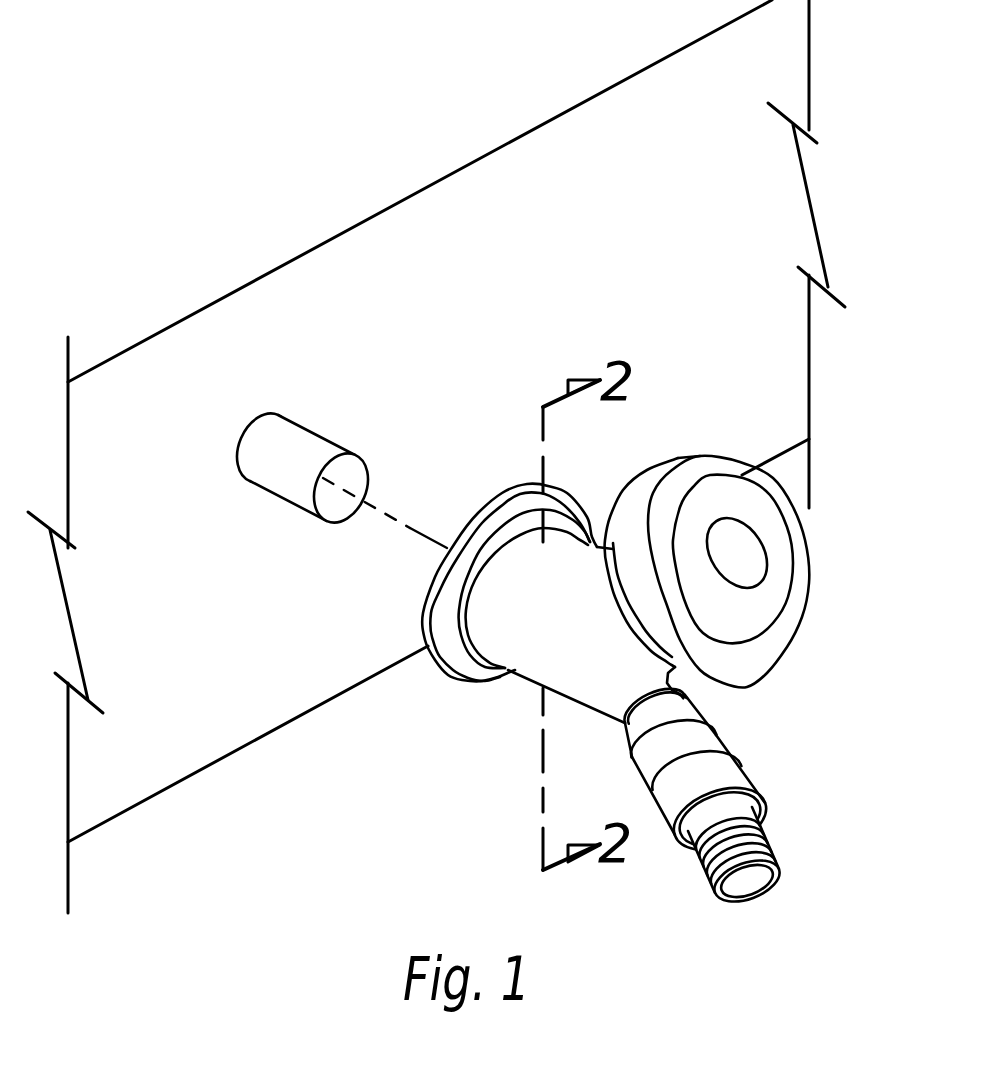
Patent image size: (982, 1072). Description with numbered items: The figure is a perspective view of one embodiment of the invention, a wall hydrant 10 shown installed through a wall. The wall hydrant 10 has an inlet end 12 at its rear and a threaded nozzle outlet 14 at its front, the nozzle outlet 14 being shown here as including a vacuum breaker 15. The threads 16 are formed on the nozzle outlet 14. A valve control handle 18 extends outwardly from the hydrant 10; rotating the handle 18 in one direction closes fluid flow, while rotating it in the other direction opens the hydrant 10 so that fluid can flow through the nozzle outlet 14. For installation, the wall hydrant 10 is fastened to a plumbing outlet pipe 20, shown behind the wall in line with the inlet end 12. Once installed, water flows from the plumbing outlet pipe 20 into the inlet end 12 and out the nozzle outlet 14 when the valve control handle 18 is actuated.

The wall hydrant 10 is at (667, 683).
The inlet end 12 is at (509, 485).
The threaded nozzle outlet 14 is at (770, 895).
The vacuum breaker 15 is at (733, 744).
The threads 16 is at (772, 834).
The valve control handle 18 is at (802, 553).
The plumbing outlet pipe 20 is at (283, 500).